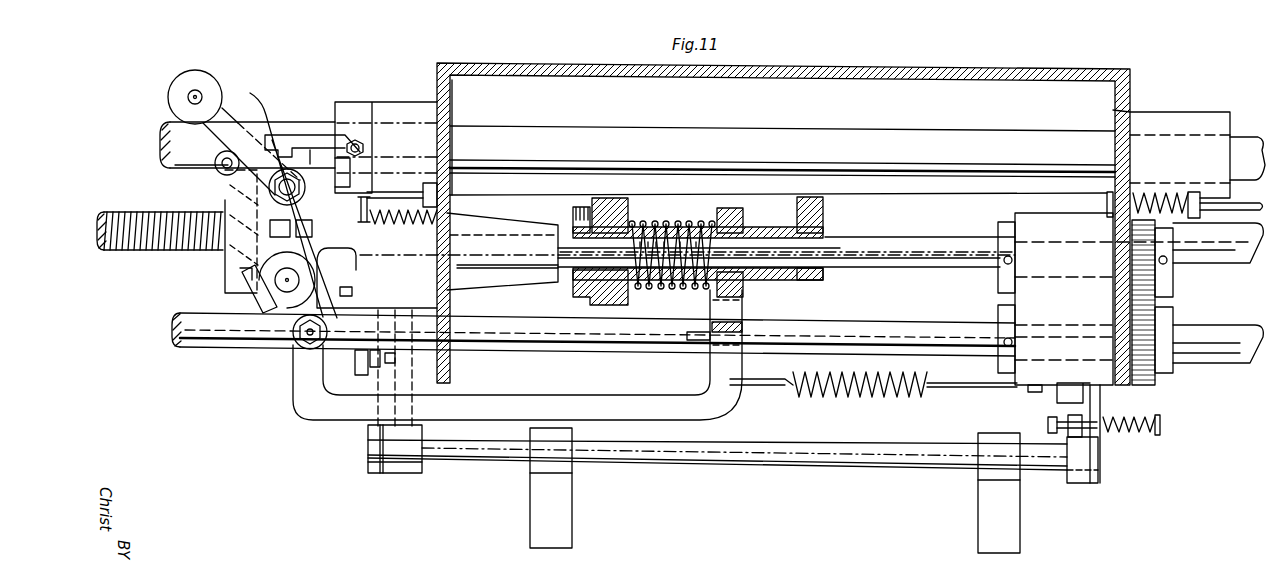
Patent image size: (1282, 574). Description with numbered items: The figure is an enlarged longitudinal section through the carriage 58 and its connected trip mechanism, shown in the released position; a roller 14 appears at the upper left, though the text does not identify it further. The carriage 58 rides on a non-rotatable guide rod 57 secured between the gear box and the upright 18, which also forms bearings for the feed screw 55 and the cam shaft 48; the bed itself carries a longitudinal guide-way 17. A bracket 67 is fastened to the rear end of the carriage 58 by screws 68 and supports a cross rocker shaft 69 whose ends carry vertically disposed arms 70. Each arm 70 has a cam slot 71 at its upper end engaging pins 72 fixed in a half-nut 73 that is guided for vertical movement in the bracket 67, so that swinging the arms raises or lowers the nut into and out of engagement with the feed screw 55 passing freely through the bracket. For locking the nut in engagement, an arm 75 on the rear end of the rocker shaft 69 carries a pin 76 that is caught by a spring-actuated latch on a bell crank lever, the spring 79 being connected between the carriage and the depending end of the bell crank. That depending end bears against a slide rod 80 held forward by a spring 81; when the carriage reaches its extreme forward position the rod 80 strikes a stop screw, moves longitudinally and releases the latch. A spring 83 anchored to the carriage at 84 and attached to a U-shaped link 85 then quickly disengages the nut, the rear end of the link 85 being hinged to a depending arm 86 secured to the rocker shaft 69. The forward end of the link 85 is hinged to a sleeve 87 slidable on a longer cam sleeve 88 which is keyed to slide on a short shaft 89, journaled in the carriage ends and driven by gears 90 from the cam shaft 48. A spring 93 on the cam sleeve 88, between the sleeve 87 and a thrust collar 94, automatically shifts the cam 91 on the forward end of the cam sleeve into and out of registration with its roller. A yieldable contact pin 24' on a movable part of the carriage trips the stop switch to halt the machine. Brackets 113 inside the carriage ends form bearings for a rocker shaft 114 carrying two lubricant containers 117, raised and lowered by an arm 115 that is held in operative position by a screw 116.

The roller 14 is at (199, 92).
The longitudinal guide-way 17 is at (283, 133).
The upright 18 is at (360, 143).
The yieldable contact pin 24' is at (1122, 428).
The cam shaft 48 is at (1222, 356).
The feed screw 55 is at (1227, 241).
The guide rod 57 is at (984, 133).
The carriage 58 is at (998, 68).
The bracket 67 is at (666, 278).
The screws 68 is at (345, 290).
The cross rocker shaft 69 is at (286, 292).
The vertically disposed arm 70 is at (325, 236).
The cam slot 71 is at (290, 200).
The pins 72 is at (387, 202).
The half-nut 73 is at (306, 151).
The arm 75 is at (236, 185).
The pin 76 is at (218, 170).
The spring 79 is at (403, 231).
The slide rod 80 is at (500, 188).
The spring 81 is at (1158, 192).
The spring 83 is at (873, 397).
The spring anchorage 84 is at (1033, 393).
The U-shaped link 85 is at (722, 415).
The depending arm 86 is at (301, 346).
The sleeve 87 is at (745, 297).
The cam sleeve 88 is at (588, 273).
The short shaft 89 is at (962, 265).
The gears 90 is at (1158, 300).
The cam 91 is at (828, 238).
The spring 93 is at (656, 218).
The thrust collar 94 is at (620, 300).
The bracket 113 is at (410, 378).
The rocker shaft 114 is at (468, 459).
The arm 115 is at (368, 433).
The screw 116 is at (356, 361).
The lubricant containers 117 is at (572, 503).